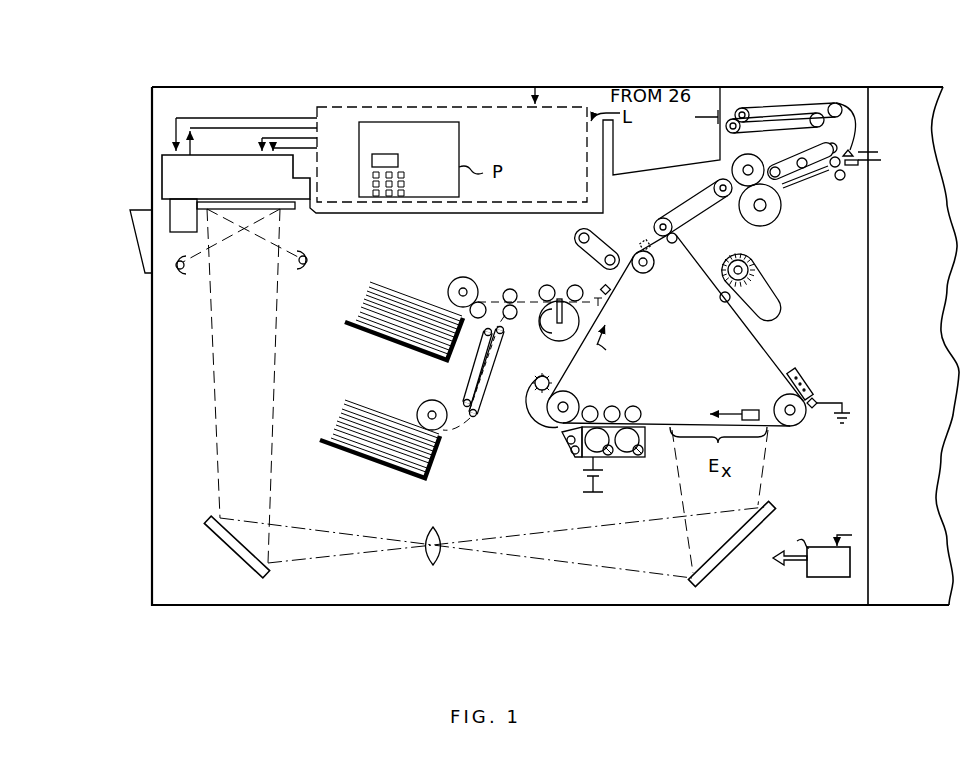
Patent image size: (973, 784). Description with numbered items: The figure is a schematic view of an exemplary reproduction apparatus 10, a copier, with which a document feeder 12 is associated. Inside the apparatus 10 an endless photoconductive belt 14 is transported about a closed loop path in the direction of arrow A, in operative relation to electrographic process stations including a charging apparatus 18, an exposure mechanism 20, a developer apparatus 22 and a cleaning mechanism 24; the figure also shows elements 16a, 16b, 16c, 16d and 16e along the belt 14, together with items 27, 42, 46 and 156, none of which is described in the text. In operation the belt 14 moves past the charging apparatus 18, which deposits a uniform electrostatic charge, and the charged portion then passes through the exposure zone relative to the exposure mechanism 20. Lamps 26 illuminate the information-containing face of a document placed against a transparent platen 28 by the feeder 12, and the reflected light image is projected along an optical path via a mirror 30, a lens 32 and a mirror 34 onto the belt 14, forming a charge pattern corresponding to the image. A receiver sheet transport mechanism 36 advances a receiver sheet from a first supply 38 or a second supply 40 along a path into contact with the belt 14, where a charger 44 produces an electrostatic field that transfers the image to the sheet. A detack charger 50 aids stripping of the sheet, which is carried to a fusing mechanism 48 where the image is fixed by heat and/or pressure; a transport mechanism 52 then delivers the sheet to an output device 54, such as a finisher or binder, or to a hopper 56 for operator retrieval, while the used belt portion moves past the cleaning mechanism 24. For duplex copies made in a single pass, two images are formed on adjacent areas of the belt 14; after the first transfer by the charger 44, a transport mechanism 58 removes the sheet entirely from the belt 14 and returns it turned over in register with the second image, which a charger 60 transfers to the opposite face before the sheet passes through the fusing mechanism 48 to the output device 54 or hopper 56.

The reproduction apparatus 10 is at (831, 83).
The document feeder 12 is at (162, 177).
The photoconductive belt 14 is at (675, 330).
The belt roller 16a is at (777, 402).
The belt roller 16b is at (576, 400).
The belt roller 16c is at (648, 274).
The belt roller 16d is at (675, 244).
The belt roller 16e is at (722, 303).
The charging apparatus 18 is at (807, 371).
The exposure mechanism 20 is at (770, 546).
The developer apparatus 22 is at (621, 461).
The cleaning mechanism 24 is at (773, 275).
The lamps 26 is at (745, 408).
The illumination lamps 27 is at (182, 269).
The transparent platen 28 is at (237, 204).
The mirror 30 is at (246, 537).
The lens 32 is at (442, 532).
The mirror 34 is at (731, 549).
The receiver sheet transport mechanism 36 is at (482, 282).
The first supply 38 is at (378, 333).
The second supply 40 is at (378, 470).
The registration roller 42 is at (551, 333).
The charger 44 is at (601, 286).
The transport belt 46 is at (679, 208).
The fusing mechanism 48 is at (752, 156).
The detack charger 50 is at (654, 229).
The transport mechanism 52 is at (792, 155).
The output device 54 is at (914, 337).
The hopper 56 is at (676, 161).
The transport mechanism 58 is at (574, 249).
The charger 60 is at (641, 243).
The document feed tray 156 is at (130, 236).